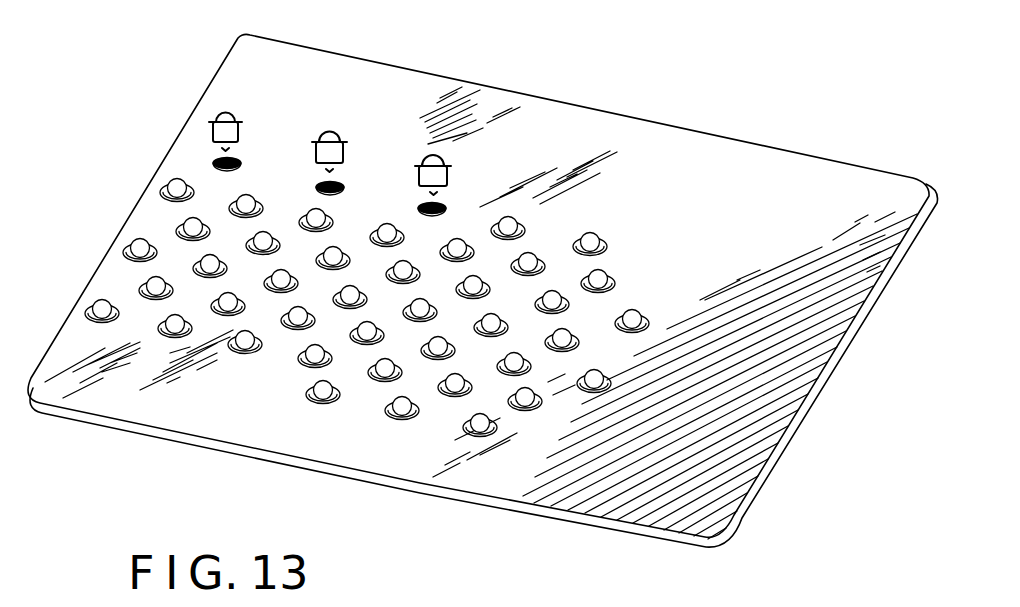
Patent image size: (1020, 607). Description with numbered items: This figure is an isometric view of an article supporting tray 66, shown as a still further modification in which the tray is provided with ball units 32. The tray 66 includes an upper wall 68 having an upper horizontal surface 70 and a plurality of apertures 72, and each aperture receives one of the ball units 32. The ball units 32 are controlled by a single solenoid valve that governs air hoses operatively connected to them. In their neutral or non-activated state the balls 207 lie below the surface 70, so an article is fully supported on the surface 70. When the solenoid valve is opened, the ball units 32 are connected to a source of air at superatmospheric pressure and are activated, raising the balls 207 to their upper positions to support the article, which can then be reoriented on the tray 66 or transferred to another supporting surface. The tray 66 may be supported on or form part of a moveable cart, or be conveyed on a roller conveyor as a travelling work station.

The ball unit 32 is at (422, 158).
The tray 66 is at (707, 112).
The upper wall 68 is at (753, 488).
The upper horizontal surface 70 is at (700, 485).
The apertures 72 is at (317, 187).
The primary ball 207 is at (477, 431).